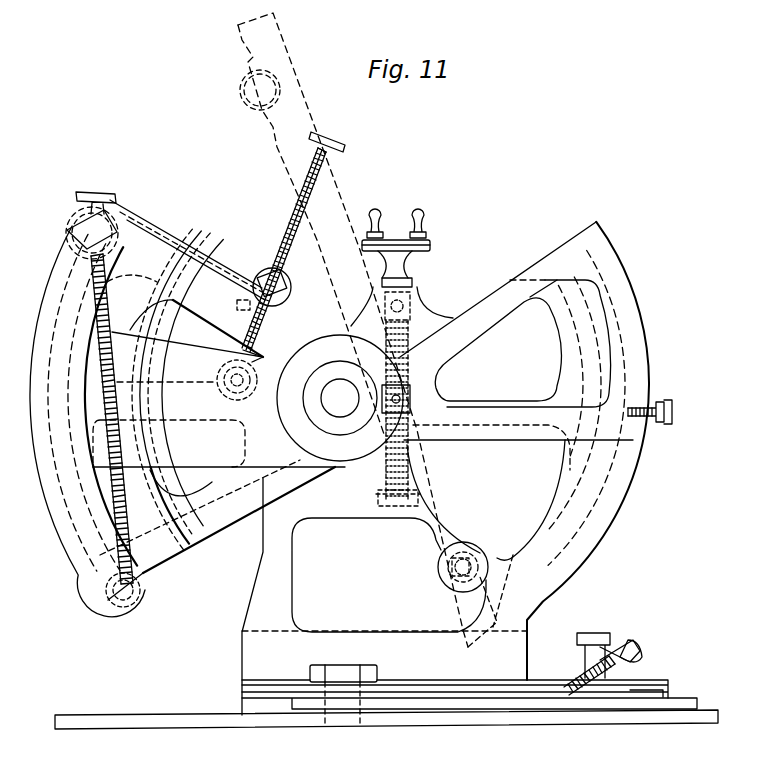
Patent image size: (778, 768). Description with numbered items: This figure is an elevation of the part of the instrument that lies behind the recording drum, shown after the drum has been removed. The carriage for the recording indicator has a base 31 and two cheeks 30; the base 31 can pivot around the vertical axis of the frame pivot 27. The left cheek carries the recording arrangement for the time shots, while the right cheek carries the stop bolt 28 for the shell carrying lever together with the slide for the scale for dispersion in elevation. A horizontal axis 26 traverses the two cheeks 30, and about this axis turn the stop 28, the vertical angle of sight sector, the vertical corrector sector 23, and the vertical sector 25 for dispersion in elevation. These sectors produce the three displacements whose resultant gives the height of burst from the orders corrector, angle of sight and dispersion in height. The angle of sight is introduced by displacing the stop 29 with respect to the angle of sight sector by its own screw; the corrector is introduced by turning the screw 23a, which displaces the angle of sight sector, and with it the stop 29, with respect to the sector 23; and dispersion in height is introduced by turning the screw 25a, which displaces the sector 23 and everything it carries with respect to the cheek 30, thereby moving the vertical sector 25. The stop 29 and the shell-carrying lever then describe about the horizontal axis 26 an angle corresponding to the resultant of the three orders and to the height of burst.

The vertical corrector sector 23 is at (58, 508).
The screw 23a is at (97, 192).
The vertical sector for dispersion in elevation 25 is at (622, 300).
The screw 25a is at (398, 265).
The horizontal axis 26 is at (340, 398).
The frame pivot 27 is at (318, 676).
The stop bolt 28 is at (465, 567).
The stop 29 is at (100, 360).
The cheek 30 is at (265, 532).
The base 31 is at (553, 691).